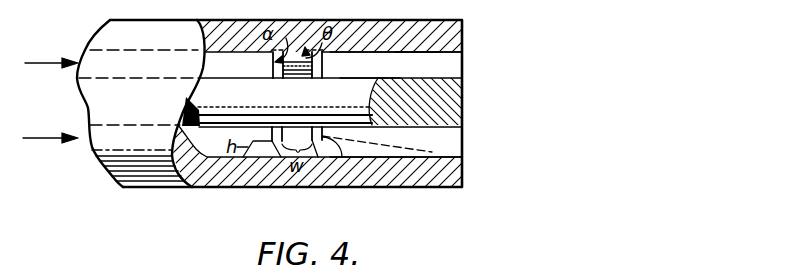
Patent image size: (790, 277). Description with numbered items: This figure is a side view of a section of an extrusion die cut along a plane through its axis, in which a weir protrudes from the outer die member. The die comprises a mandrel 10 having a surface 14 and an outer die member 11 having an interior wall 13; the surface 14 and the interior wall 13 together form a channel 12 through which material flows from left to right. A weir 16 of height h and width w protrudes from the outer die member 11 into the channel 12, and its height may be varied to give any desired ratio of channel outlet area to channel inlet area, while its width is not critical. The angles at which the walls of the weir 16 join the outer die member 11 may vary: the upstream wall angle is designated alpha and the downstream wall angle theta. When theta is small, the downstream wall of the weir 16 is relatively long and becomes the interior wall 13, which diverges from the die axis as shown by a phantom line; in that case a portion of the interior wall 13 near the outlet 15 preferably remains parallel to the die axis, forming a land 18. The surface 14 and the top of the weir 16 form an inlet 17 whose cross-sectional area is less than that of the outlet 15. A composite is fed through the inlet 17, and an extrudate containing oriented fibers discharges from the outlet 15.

The mandrel 10 is at (462, 97).
The outer die member 11 is at (463, 33).
The channel 12 is at (403, 148).
The interior wall 13 is at (383, 215).
The surface 14 is at (397, 75).
The outlet 15 is at (450, 64).
The weir 16 is at (311, 78).
The inlet 17 is at (273, 70).
The land 18 is at (432, 152).